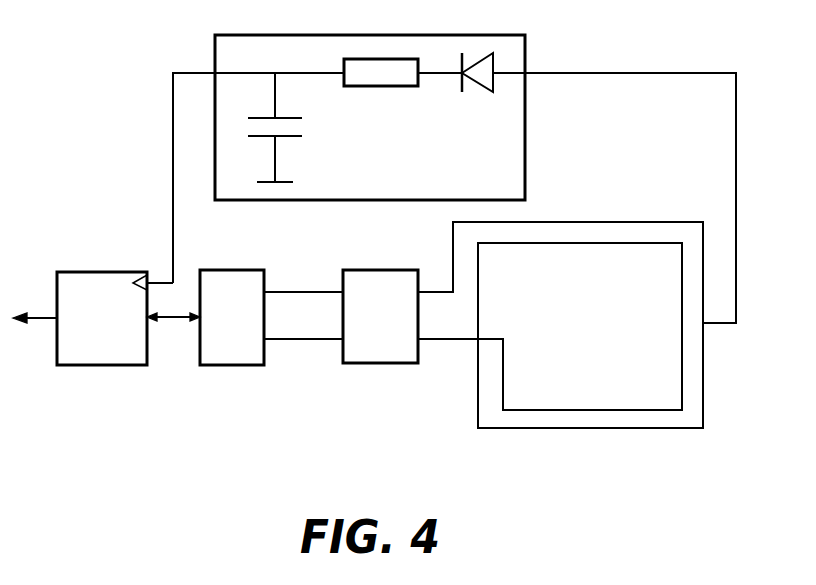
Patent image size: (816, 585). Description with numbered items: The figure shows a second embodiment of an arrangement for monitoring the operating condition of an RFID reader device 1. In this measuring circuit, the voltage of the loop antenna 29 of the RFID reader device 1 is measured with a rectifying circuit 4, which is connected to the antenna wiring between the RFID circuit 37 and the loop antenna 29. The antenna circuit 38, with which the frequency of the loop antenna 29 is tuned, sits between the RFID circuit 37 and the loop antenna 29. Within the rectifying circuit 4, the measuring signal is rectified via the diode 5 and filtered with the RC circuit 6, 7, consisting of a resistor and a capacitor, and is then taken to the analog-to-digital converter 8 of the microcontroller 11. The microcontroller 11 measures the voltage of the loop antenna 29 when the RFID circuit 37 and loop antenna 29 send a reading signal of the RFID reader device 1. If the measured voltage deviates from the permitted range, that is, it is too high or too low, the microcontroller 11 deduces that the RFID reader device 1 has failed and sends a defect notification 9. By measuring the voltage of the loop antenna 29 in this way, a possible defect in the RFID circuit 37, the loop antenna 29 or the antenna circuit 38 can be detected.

The RFID reader device 1 is at (108, 117).
The rectifying circuit 4 is at (393, 117).
The diode 5 is at (477, 83).
The RC circuit 6 is at (373, 86).
The RC circuit 7 is at (295, 128).
The analog-to-digital converter 8 is at (137, 280).
The defect notification 9 is at (35, 318).
The microcontroller 11 is at (100, 365).
The loop antenna 29 is at (662, 428).
The RFID circuit 37 is at (230, 365).
The antenna circuit 38 is at (382, 363).